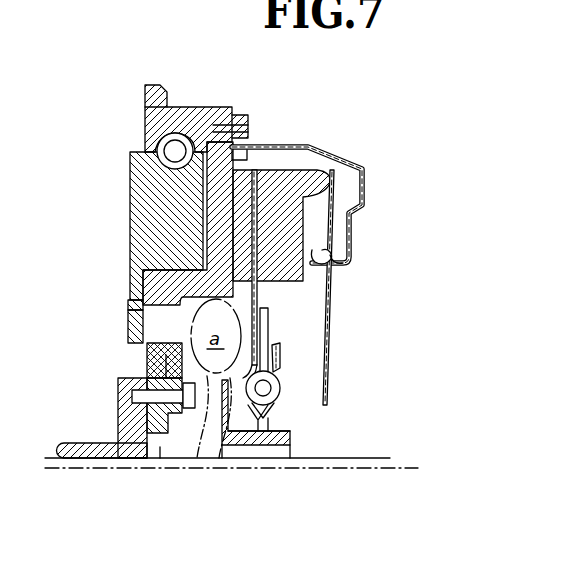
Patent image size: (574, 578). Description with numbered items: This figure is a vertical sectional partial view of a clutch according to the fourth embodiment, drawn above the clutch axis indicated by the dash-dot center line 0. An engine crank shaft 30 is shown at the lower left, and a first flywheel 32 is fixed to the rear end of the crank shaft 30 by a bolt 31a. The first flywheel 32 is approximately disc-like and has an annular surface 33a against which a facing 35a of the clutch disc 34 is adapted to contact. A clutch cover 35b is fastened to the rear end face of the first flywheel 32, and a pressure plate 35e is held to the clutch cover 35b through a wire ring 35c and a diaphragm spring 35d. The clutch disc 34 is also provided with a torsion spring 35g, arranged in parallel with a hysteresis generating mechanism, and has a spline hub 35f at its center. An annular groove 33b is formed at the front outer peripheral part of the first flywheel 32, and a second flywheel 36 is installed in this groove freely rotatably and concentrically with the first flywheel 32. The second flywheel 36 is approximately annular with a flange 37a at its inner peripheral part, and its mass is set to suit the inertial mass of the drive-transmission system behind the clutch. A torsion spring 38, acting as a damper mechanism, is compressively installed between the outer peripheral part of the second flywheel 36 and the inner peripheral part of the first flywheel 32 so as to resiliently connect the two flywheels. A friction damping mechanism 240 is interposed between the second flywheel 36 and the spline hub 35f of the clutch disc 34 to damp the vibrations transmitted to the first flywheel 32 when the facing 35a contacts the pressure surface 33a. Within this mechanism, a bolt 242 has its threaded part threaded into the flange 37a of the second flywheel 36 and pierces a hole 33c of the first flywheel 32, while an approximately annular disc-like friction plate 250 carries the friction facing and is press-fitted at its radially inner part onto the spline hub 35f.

The engine crank shaft 30 is at (98, 443).
The bolt 31a is at (165, 456).
The first flywheel 32 is at (202, 122).
The annular surface 33a is at (250, 155).
The annular groove 33b is at (200, 213).
The hole 33c is at (168, 360).
The clutch disc 34 is at (280, 322).
The facing 35a is at (272, 276).
The clutch cover 35b is at (346, 162).
The wire ring 35c is at (348, 246).
The diaphragm spring 35d is at (329, 345).
The pressure plate 35e is at (296, 213).
The spline hub 35f is at (284, 440).
The torsion spring 35g is at (272, 388).
The second flywheel 36 is at (163, 242).
The flange 37a is at (136, 297).
The torsion spring 38 is at (167, 137).
The friction damping mechanism 240 is at (203, 421).
The bolt 242 is at (158, 325).
The friction plate 250 is at (218, 441).
The reference axis 0 is at (239, 468).